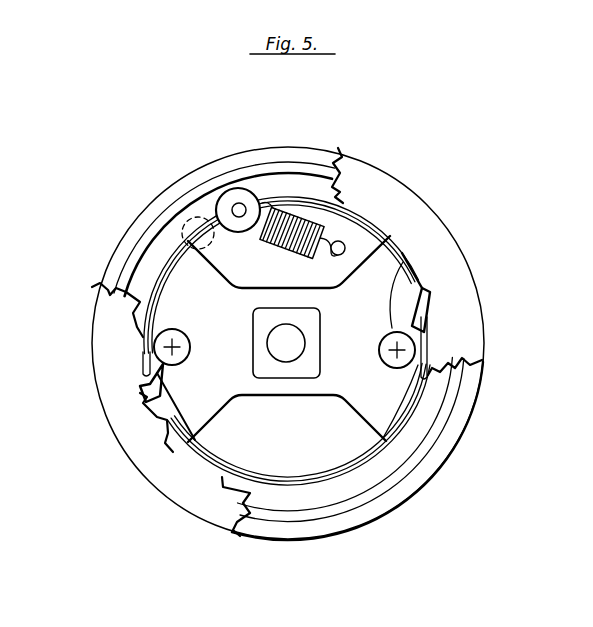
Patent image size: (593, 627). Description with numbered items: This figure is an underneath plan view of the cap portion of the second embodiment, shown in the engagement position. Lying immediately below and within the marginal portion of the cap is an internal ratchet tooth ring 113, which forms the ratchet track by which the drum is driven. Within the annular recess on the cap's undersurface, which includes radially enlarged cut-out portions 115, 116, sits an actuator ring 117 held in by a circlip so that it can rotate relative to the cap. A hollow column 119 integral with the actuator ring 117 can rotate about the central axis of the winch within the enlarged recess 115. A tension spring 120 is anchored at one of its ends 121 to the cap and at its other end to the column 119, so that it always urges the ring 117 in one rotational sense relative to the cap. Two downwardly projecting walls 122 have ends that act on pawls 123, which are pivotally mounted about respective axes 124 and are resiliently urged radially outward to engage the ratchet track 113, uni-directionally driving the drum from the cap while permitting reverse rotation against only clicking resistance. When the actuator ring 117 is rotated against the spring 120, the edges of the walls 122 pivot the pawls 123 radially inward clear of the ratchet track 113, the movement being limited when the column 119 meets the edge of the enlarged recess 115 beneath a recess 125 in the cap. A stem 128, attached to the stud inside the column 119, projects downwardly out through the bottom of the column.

The internal ratchet tooth ring 113 is at (396, 235).
The radially enlarged cut-out portion 115 is at (308, 215).
The radially enlarged cut-out portion 116 is at (297, 462).
The actuator ring 117 is at (158, 255).
The hollow column 119 is at (225, 205).
The tension spring 120 is at (340, 244).
The end of tension spring 121 is at (371, 229).
The downwardly projecting walls 122 is at (152, 343).
The pawls 123 is at (413, 317).
The pivot axes 124 is at (402, 358).
The recess 125 is at (198, 237).
The stem 128 is at (240, 204).